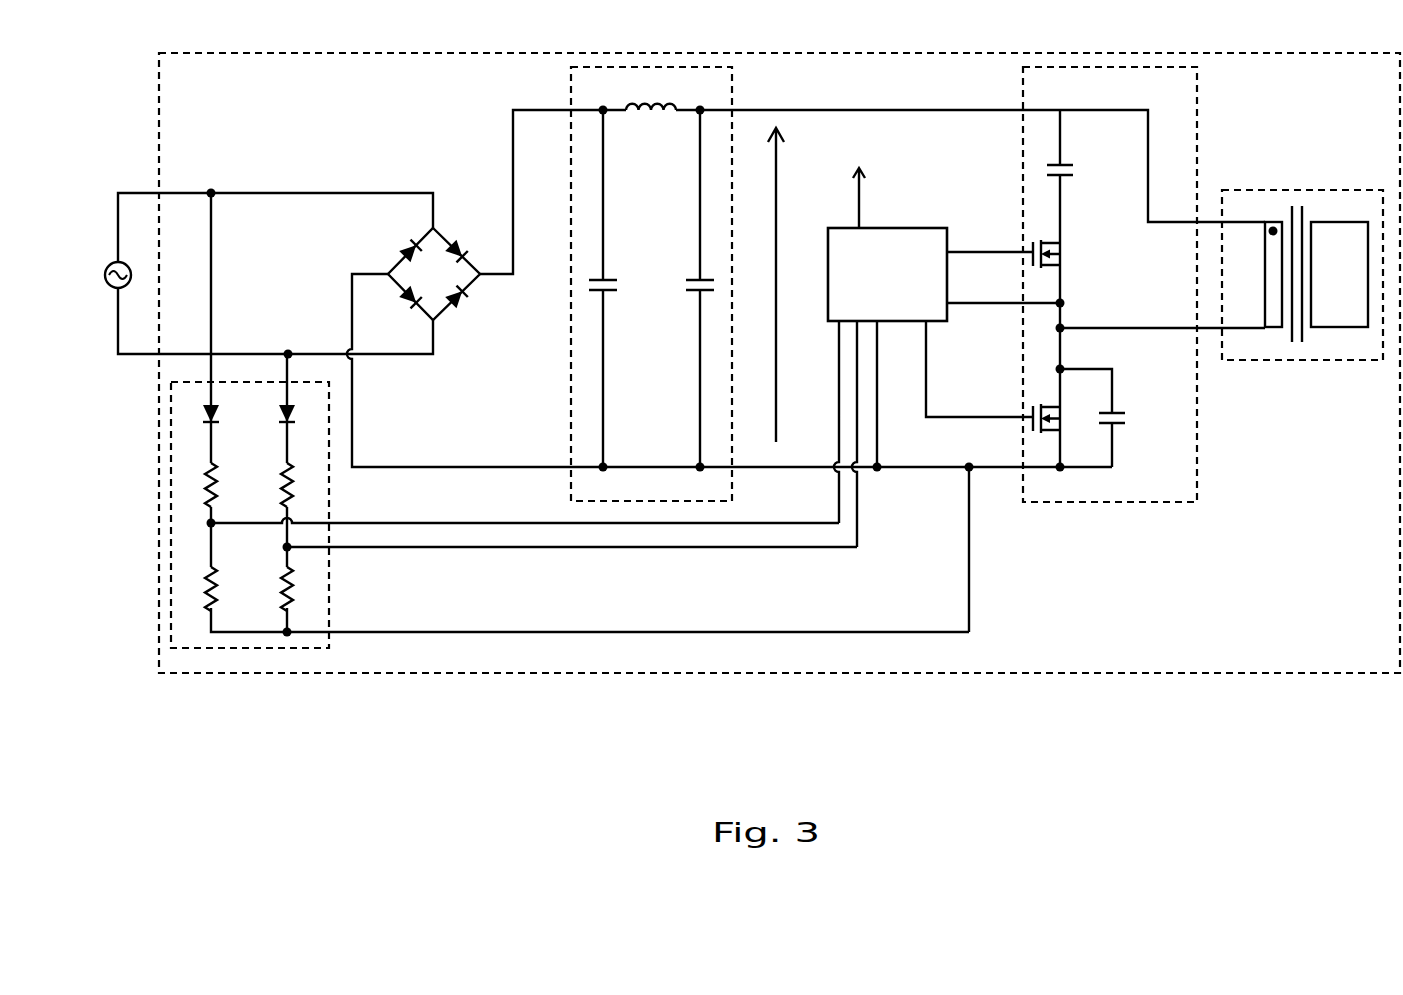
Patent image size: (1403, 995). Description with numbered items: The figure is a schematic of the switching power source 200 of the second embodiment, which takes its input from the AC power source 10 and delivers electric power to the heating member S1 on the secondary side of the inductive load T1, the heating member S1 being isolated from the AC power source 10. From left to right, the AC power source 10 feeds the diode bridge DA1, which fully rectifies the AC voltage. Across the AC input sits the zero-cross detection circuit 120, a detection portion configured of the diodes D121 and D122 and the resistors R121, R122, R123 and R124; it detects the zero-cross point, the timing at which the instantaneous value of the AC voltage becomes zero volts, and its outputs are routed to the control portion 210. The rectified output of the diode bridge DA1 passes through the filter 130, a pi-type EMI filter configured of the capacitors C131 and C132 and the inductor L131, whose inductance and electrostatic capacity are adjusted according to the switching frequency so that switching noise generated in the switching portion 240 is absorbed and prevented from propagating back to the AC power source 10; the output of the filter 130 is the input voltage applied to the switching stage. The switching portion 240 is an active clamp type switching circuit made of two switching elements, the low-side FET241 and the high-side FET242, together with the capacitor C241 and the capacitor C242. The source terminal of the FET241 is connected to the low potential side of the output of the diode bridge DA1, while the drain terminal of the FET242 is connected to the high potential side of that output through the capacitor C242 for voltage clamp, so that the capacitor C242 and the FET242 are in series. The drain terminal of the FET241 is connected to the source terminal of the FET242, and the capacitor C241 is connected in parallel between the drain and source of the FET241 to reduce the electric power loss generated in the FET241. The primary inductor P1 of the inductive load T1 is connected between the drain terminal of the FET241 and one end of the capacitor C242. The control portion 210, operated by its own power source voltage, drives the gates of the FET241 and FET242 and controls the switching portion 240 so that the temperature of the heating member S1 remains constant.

The AC power source 10 is at (103, 247).
The switching power source 200 is at (748, 382).
The zero-cross detection circuit 120 is at (533, 429).
The diode D121 is at (223, 393).
The diode D122 is at (295, 397).
The resistor R121 is at (197, 485).
The resistor R122 is at (197, 587).
The resistor R123 is at (307, 483).
The resistor R124 is at (307, 587).
The diode bridge DA1 is at (463, 227).
The filter 130 is at (651, 286).
The inductor L131 is at (651, 116).
The capacitor C131 is at (628, 287).
The capacitor C132 is at (689, 301).
The control portion 210 is at (887, 274).
The switching portion 240 is at (1086, 304).
The low-side FET FET241 is at (1040, 402).
The high-side FET FET242 is at (1040, 230).
The capacitor C241 is at (1128, 403).
The capacitor for voltage clamp C242 is at (1068, 182).
The inductive load T1 is at (1302, 257).
The primary inductor P1 is at (1254, 274).
The heating member S1 is at (1339, 274).